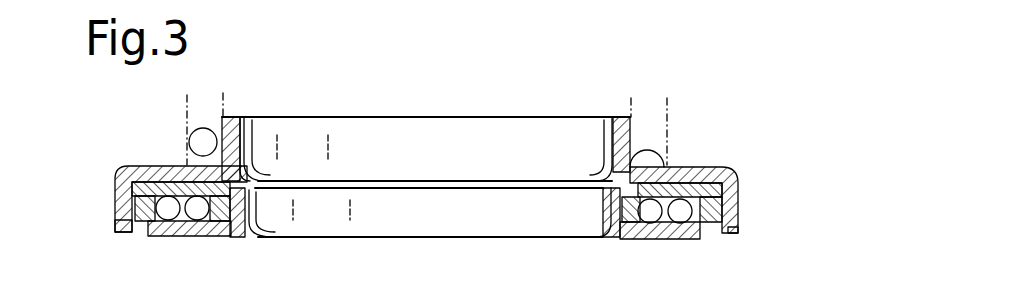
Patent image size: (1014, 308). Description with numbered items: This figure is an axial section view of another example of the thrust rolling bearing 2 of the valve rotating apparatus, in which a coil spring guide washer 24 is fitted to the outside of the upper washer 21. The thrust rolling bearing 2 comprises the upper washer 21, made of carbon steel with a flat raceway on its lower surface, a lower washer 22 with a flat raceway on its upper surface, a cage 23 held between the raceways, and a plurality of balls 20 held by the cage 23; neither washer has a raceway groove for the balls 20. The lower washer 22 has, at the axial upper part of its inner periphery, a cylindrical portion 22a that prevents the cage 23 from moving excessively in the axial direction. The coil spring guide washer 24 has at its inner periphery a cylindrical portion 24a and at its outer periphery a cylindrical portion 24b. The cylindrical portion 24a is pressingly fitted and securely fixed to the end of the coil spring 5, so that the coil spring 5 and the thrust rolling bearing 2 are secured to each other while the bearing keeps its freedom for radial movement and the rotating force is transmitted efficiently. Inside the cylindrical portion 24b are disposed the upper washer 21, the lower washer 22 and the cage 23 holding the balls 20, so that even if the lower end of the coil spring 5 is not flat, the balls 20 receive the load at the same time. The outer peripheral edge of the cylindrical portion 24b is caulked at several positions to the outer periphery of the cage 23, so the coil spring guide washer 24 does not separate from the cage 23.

The thrust rolling bearing 2 is at (547, 95).
The coil spring 5 is at (668, 118).
The balls 20 is at (652, 223).
The upper washer 21 is at (690, 170).
The lower washer 22 is at (686, 239).
The cylindrical portion 22a is at (259, 222).
The cage 23 is at (741, 212).
The coil spring guide washer 24 is at (160, 166).
The cylindrical portion 24a is at (252, 118).
The cylindrical portion 24b is at (113, 207).